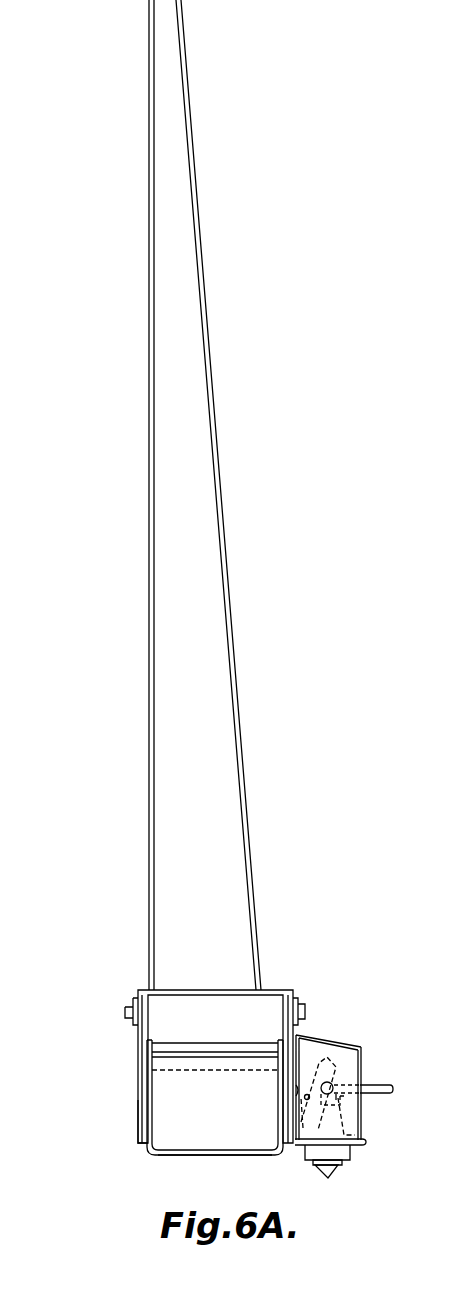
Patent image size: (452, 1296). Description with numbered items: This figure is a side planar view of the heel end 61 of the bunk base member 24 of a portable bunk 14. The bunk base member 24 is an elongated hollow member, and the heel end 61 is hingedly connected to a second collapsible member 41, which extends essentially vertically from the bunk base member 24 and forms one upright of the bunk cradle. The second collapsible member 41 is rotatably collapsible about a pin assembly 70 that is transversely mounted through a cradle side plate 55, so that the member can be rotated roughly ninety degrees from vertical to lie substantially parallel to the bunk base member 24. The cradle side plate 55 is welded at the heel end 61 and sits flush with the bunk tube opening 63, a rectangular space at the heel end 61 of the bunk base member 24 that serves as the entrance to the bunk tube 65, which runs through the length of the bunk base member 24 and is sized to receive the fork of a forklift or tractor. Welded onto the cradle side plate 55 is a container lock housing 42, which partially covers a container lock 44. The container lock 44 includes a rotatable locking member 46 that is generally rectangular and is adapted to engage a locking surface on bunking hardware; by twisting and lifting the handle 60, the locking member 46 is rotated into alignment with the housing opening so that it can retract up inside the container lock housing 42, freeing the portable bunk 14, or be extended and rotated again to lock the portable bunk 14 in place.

The portable bunk 14 is at (92, 529).
The second collapsible member 41 is at (220, 783).
The cradle side plate 55 is at (137, 1050).
The pin assembly 70 is at (303, 1001).
The bunk tube 65 is at (146, 1108).
The bunk tube opening 63 is at (183, 1120).
The bunk base member 24 is at (233, 1160).
The heel end 61 is at (101, 1141).
The container lock housing 42 is at (363, 1052).
The handle 60 is at (371, 1086).
The container lock 44 is at (352, 1116).
The locking member 46 is at (343, 1170).